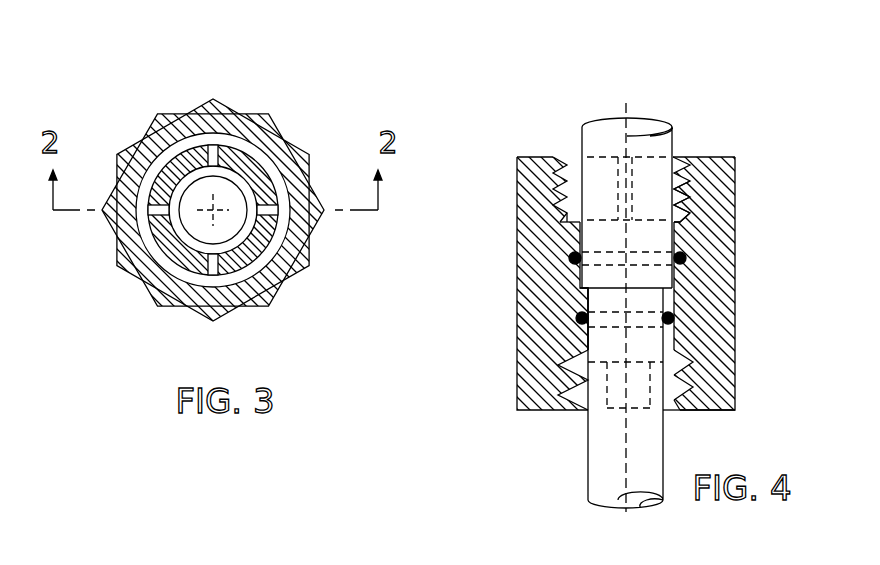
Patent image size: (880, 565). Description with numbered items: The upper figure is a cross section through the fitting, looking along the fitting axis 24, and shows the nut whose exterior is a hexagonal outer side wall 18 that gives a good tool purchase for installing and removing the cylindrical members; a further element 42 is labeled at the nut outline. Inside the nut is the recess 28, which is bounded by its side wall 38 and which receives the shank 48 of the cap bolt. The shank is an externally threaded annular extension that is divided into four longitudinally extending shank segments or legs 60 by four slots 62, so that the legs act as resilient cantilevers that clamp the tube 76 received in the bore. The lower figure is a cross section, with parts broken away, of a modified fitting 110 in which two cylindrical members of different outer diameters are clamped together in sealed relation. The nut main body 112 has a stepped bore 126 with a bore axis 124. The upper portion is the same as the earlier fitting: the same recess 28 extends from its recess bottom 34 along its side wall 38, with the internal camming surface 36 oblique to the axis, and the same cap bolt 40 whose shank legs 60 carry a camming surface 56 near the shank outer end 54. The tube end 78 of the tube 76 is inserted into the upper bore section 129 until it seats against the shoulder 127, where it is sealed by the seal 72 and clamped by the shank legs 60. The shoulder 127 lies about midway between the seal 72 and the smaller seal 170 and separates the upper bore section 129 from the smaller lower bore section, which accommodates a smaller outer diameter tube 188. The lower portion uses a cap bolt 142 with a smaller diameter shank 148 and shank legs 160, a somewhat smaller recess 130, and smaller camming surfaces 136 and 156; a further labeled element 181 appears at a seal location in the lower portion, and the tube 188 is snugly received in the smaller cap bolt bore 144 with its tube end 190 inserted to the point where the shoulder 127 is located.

In FIG. 3, the outer side wall 18 is at (249, 113).
In FIG. 3, the fitting axis 24 is at (210, 205).
In FIG. 3, the recess 28 is at (145, 187).
In FIG. 4, the recess 28 is at (584, 222).
In FIG. 3, the side wall 38 is at (148, 247).
In FIG. 3, the hexagonal flange 42 is at (118, 274).
In FIG. 3, the shank segments 60 is at (168, 170).
In FIG. 4, the shank segments 60 is at (568, 175).
In FIG. 3, the slots 62 is at (212, 147).
In FIG. 3, the tube 76 is at (190, 258).
In FIG. 4, the fitting 110 is at (494, 146).
In FIG. 4, the nut main body 112 is at (515, 239).
In FIG. 4, the cap bolt 40 is at (687, 150).
In FIG. 4, the shank 48 is at (688, 166).
In FIG. 4, the stepped bore 126 is at (588, 215).
In FIG. 4, the internal camming surface 36 is at (722, 195).
In FIG. 4, the camming surface 56 is at (694, 212).
In FIG. 4, the shank outer end 54 is at (690, 225).
In FIG. 4, the recess bottom 34 is at (678, 240).
In FIG. 4, the seal 72 is at (706, 300).
In FIG. 4, the tube end 78 is at (688, 320).
In FIG. 4, the seal 170 is at (693, 342).
In FIG. 4, the camming surface 156 is at (693, 377).
In FIG. 4, the camming surface 136 is at (737, 407).
In FIG. 4, the cap bolt 142 is at (683, 416).
In FIG. 4, the shank 148 is at (670, 411).
In FIG. 4, the recess 130 is at (580, 360).
In FIG. 4, the shoulder 127 is at (662, 287).
In FIG. 4, the tube 188 is at (584, 482).
In FIG. 4, the cap bolt bore 144 is at (603, 387).
In FIG. 4, the shank legs 160 is at (593, 388).
In FIG. 4, the bore axis 124 is at (622, 107).
In FIG. 4, the upper bore section 129 is at (583, 280).
In FIG. 4, the tube end 190 is at (587, 303).
In FIG. 4, the lower seal 181 is at (580, 324).